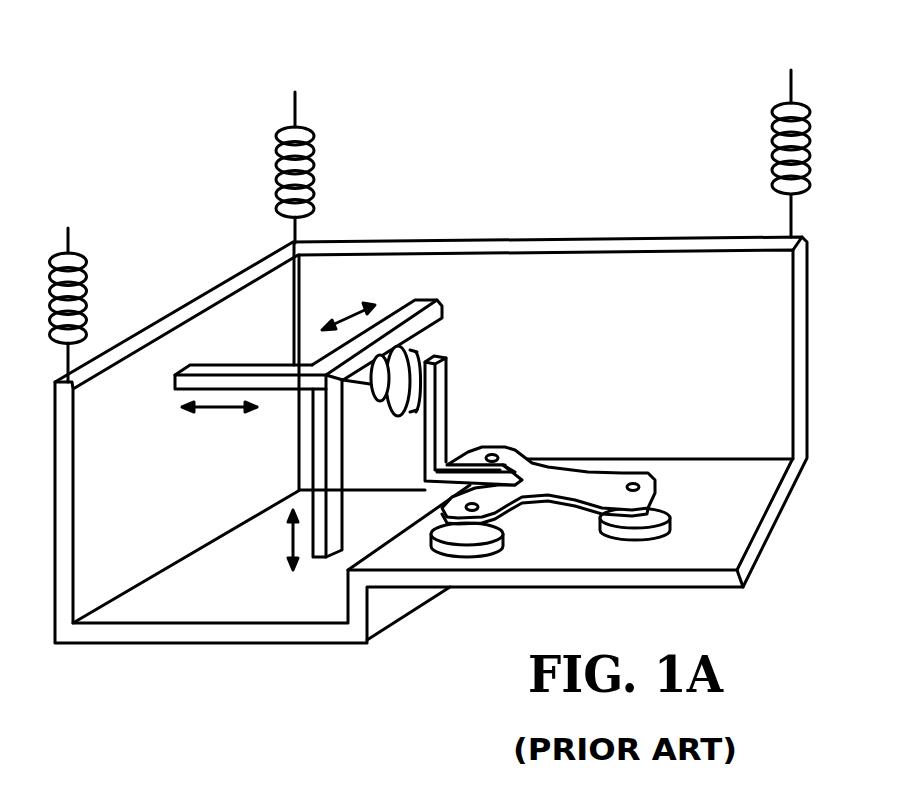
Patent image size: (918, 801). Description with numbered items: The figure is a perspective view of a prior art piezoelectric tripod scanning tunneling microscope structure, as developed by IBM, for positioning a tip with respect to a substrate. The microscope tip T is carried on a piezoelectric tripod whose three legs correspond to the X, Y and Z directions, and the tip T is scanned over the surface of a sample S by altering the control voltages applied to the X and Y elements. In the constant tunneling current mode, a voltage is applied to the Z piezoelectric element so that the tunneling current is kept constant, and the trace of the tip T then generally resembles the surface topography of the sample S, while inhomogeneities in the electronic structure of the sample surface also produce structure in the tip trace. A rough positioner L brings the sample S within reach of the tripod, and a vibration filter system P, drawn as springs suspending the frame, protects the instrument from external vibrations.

The vibration filter system P is at (82, 255).
The microscope tip T is at (368, 402).
The sample S is at (415, 355).
The rough positioner L is at (563, 488).
The X piezoelectric element of the tripod X is at (290, 533).
The Y piezoelectric element of the tripod Y is at (347, 320).
The Z piezoelectric element of the tripod Z is at (233, 410).